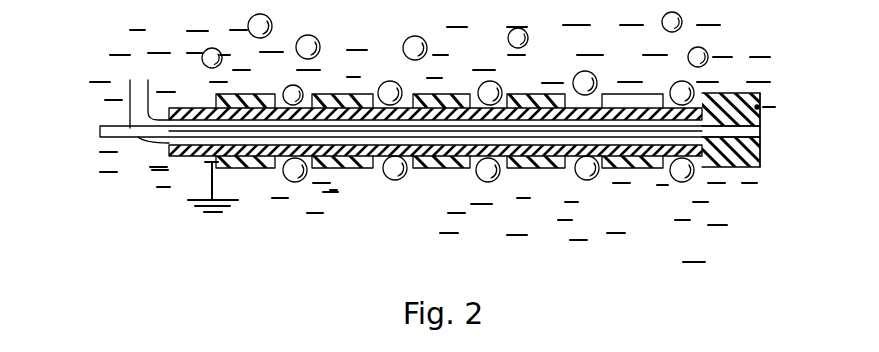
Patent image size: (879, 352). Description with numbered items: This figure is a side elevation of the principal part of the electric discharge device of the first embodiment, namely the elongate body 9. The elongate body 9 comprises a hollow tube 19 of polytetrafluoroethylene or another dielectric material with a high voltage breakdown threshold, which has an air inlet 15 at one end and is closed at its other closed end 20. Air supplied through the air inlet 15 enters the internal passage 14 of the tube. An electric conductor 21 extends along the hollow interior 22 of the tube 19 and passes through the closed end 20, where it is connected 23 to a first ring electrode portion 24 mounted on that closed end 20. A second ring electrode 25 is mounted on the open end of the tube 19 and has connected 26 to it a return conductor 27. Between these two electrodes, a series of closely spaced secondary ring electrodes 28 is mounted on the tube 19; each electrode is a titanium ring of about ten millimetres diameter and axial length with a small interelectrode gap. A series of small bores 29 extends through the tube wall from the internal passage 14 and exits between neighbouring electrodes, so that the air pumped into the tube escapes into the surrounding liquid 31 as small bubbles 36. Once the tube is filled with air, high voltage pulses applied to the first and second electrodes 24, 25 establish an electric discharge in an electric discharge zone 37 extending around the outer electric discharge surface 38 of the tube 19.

The elongate body 9 is at (761, 142).
The internal passage 14 is at (193, 108).
The air inlet 15 is at (165, 147).
The hollow tube 19 is at (527, 160).
The closed end 20 is at (761, 168).
The electric conductor 21 is at (367, 221).
The hollow interior 22 is at (196, 140).
The connection 23 is at (759, 104).
The first ring electrode portion 24 is at (732, 92).
The second ring electrode 25 is at (265, 183).
The connection 26 is at (205, 165).
The return conductor 27 is at (213, 187).
The secondary ring electrodes 28 is at (560, 167).
The small bores 29 is at (402, 165).
The liquid 31 is at (694, 251).
The small bubbles 36 is at (592, 74).
The electric discharge zone 37 is at (481, 194).
The outer electric discharge surface 38 is at (380, 183).